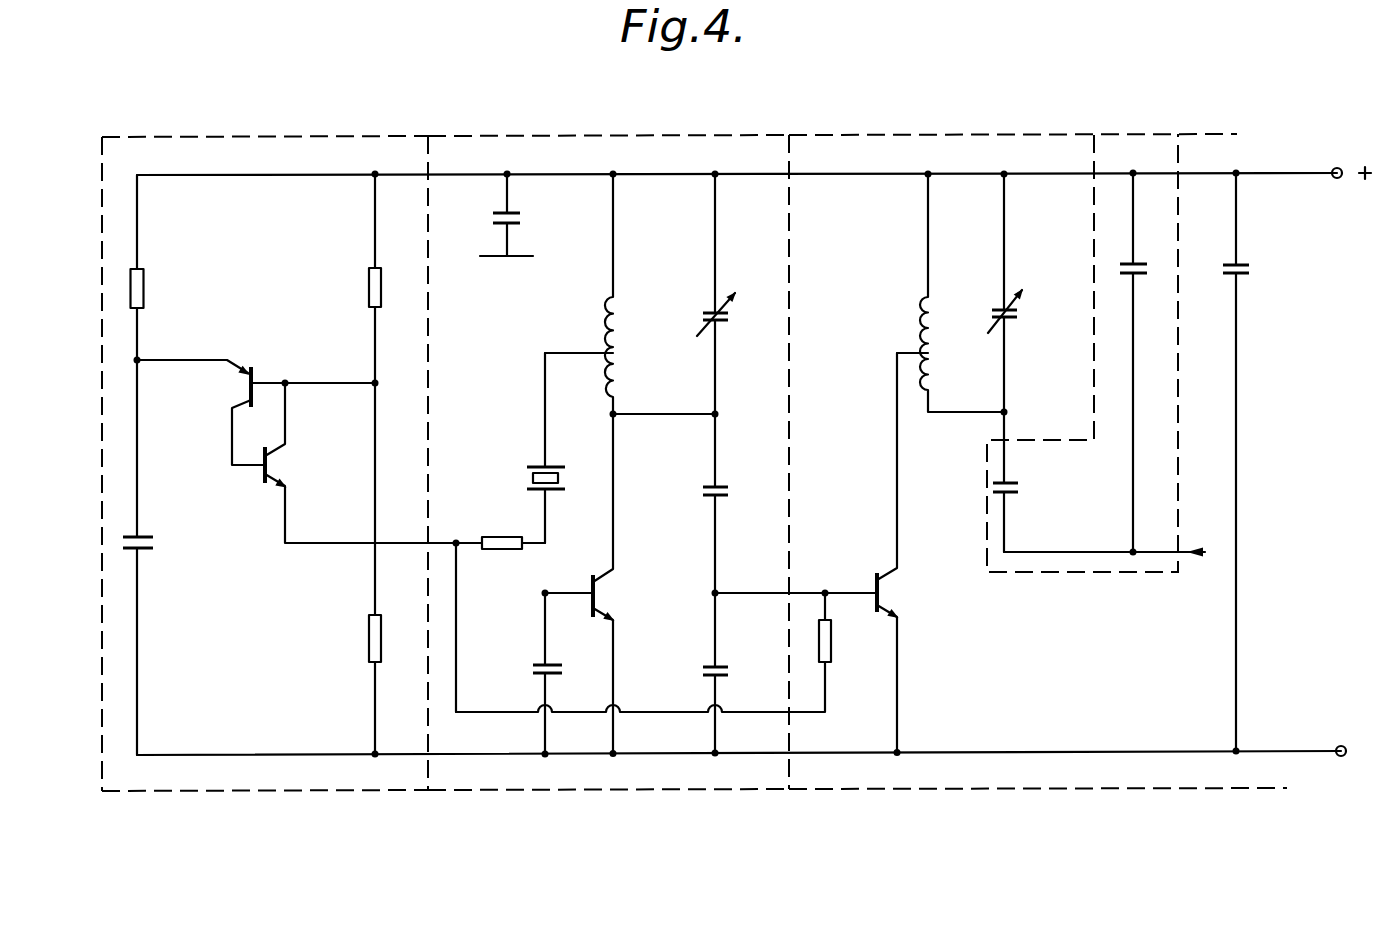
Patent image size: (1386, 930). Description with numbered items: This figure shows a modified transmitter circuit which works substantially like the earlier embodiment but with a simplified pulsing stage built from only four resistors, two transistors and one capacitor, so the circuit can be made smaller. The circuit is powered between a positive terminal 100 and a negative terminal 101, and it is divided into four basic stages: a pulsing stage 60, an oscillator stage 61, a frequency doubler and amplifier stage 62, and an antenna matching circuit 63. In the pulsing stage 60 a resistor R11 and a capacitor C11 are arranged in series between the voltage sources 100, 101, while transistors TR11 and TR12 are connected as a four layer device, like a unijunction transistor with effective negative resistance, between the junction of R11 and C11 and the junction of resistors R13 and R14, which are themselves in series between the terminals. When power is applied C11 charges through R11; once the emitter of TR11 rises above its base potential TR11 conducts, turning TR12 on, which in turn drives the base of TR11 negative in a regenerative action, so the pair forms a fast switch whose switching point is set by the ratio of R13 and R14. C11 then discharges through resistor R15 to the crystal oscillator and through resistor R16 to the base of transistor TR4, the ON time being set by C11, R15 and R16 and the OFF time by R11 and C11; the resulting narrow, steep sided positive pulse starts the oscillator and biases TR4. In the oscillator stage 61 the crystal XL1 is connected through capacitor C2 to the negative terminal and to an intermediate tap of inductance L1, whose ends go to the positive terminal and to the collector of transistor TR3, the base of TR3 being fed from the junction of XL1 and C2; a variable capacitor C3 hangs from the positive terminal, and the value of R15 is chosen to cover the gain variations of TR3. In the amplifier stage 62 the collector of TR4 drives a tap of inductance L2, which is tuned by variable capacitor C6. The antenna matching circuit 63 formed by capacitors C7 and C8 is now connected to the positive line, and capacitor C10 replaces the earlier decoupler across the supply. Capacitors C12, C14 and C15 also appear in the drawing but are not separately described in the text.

The pulsing stage 60 is at (316, 136).
The oscillator stage 61 is at (596, 136).
The frequency doubler and amplifier stage 62 is at (944, 136).
The antenna matching circuit 63 is at (1150, 135).
The positive terminal 100 is at (1350, 158).
The negative terminal 101 is at (1349, 769).
The resistor R11 is at (144, 283).
The resistor R13 is at (368, 295).
The resistor R14 is at (368, 641).
The resistor R15 is at (497, 529).
The resistor R16 is at (832, 640).
The capacitor C11 is at (153, 548).
The capacitor C12 (4M7) C12 is at (529, 214).
The capacitor C2 is at (533, 664).
The variable capacitor C3 is at (726, 294).
The capacitor C14 (33pF) C14 is at (743, 505).
The capacitor C15 (33pF) C15 is at (713, 666).
The variable capacitor C6 is at (1017, 292).
The capacitor C7 is at (1014, 484).
The capacitor C8 is at (1139, 266).
The capacitor C10 is at (1248, 268).
The transistor TR11 is at (264, 361).
The transistor TR12 is at (269, 457).
The transistor TR3 is at (602, 597).
The transistor TR4 is at (889, 592).
The inductance L1 is at (630, 294).
The inductance L2 is at (878, 388).
The crystal XL1 is at (527, 472).